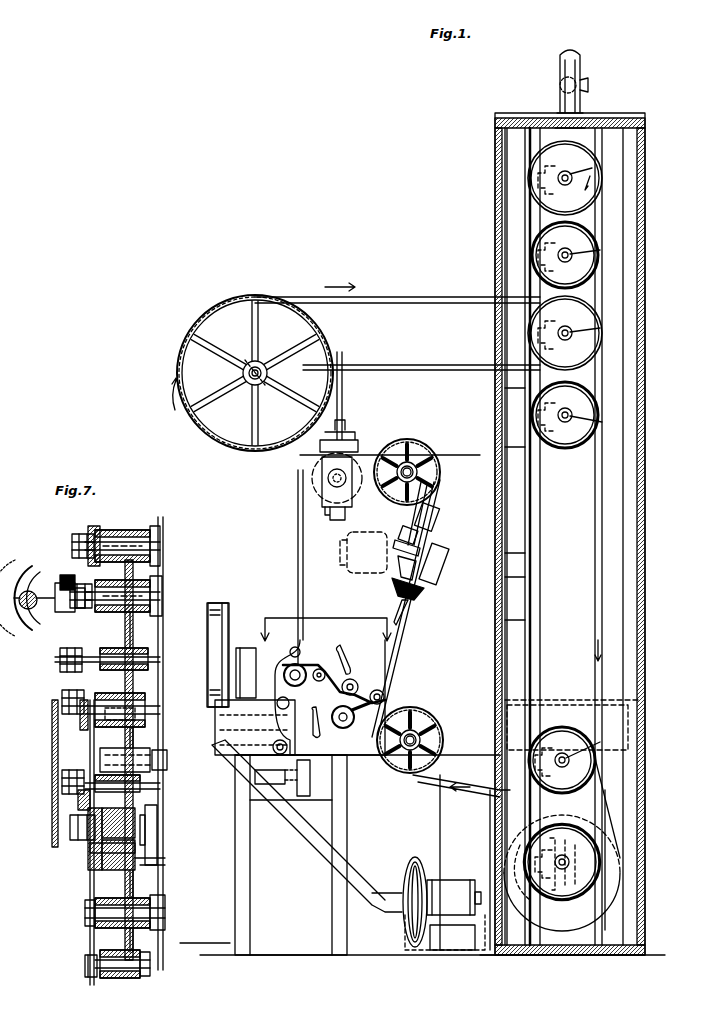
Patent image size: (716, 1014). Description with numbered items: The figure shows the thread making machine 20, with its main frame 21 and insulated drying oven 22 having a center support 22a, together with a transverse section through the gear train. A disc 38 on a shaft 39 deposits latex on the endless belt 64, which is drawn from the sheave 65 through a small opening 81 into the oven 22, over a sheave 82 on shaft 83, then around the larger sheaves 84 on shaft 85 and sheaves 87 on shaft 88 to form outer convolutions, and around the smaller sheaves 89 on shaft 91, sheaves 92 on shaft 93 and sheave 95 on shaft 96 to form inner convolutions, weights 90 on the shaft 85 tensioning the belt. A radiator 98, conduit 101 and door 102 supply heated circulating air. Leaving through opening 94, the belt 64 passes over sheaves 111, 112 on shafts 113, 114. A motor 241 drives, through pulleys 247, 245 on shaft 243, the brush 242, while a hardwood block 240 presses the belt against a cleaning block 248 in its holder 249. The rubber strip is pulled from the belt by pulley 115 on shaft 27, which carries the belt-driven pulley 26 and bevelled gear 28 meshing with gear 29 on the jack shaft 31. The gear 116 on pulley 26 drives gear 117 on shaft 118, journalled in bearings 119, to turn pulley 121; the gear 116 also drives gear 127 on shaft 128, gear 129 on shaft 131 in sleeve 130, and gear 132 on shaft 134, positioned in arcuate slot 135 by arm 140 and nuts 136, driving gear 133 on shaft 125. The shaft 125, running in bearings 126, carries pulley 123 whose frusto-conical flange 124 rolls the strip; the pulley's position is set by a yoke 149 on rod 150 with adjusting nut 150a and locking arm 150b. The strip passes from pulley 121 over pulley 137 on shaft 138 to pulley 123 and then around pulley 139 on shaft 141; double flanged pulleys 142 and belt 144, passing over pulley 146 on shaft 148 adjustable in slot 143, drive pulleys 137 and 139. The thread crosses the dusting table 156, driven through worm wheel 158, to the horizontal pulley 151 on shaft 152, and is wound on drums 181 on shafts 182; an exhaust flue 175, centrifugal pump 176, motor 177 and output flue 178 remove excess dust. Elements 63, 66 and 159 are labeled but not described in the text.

In FIG. 1, the thread making machine 20 is at (298, 535).
In FIG. 1, the main frame 21 is at (303, 563).
In FIG. 7, the main frame 21 is at (163, 575).
In FIG. 1, the drying oven 22 is at (642, 620).
In FIG. 1, the center support 22a is at (541, 518).
In FIG. 7, the second pulley 26 is at (78, 585).
In FIG. 7, the shaft 27 is at (134, 620).
In FIG. 7, the bevelled gear 28 is at (62, 575).
In FIG. 7, the beveled gear 29 is at (32, 585).
In FIG. 7, the jack shaft 31 is at (22, 578).
In FIG. 1, the disc 38 is at (320, 483).
In FIG. 1, the shaft 39 is at (330, 488).
In FIG. 1, the bracket 63 is at (320, 452).
In FIG. 1, the endless belt 64 is at (480, 303).
In FIG. 1, the sheave 65 is at (205, 330).
In FIG. 1, the pulley shaft 66 is at (255, 383).
In FIG. 1, the small opening 81 is at (487, 297).
In FIG. 1, the sheave 82 is at (592, 311).
In FIG. 1, the journalled shaft 83 is at (595, 328).
In FIG. 1, the sheaves 84 is at (580, 895).
In FIG. 1, the shaft 85 is at (615, 855).
In FIG. 1, the sheaves 87 is at (590, 156).
In FIG. 1, the shaft 88 is at (594, 167).
In FIG. 1, the sheaves 89 is at (570, 715).
In FIG. 1, the weights 90 is at (500, 850).
In FIG. 1, the shaft 91 is at (593, 743).
In FIG. 1, the sheaves 92 is at (590, 233).
In FIG. 1, the shaft 93 is at (595, 249).
In FIG. 1, the small opening 94 is at (493, 785).
In FIG. 1, the sheave 95 is at (592, 404).
In FIG. 1, the shaft 96 is at (596, 422).
In FIG. 1, the radiator 98 is at (620, 748).
In FIG. 1, the conduit 101 is at (610, 800).
In FIG. 1, the door 102 is at (600, 915).
In FIG. 1, the sheave 111 is at (430, 725).
In FIG. 1, the sheave 112 is at (420, 462).
In FIG. 1, the shaft 113 is at (444, 740).
In FIG. 1, the shaft 114 is at (412, 440).
In FIG. 1, the pulley 115 is at (382, 690).
In FIG. 7, the pulley 115 is at (162, 530).
In FIG. 7, the gear 116 is at (125, 618).
In FIG. 7, the gear 117 is at (80, 534).
In FIG. 7, the shaft 118 is at (130, 522).
In FIG. 7, the bearings 119 is at (94, 526).
In FIG. 1, the pulley 121 is at (358, 636).
In FIG. 7, the pulley 121 is at (165, 595).
In FIG. 1, the pulley 123 is at (282, 652).
In FIG. 7, the pulley 123 is at (150, 845).
In FIG. 7, the frusto-conical flange 124 is at (160, 858).
In FIG. 7, the shaft 125 is at (158, 828).
In FIG. 7, the bearings 126 is at (90, 850).
In FIG. 7, the gear 127 is at (62, 695).
In FIG. 7, the shaft 128 is at (150, 655).
In FIG. 7, the gear 129 is at (80, 710).
In FIG. 7, the sleeve 130 is at (145, 690).
In FIG. 7, the shaft 131 is at (148, 705).
In FIG. 7, the gear 132 is at (150, 714).
In FIG. 7, the gear 133 is at (72, 840).
In FIG. 7, the shaft 134 is at (145, 788).
In FIG. 1, the arcuate slot 135 is at (343, 729).
In FIG. 7, the arcuate slot 135 is at (142, 792).
In FIG. 7, the nuts 136 is at (62, 785).
In FIG. 1, the pulley 137 is at (302, 660).
In FIG. 7, the pulley 137 is at (165, 752).
In FIG. 7, the shaft 138 is at (167, 762).
In FIG. 1, the pulley 139 is at (315, 682).
In FIG. 7, the pulley 139 is at (165, 915).
In FIG. 7, the arm 140 is at (58, 745).
In FIG. 7, the shaft 141 is at (135, 918).
In FIG. 7, the double flanged pulleys 142 is at (88, 915).
In FIG. 7, the slot 143 is at (145, 976).
In FIG. 7, the belt 144 is at (90, 942).
In FIG. 7, the pulley 146 is at (88, 965).
In FIG. 7, the shaft 148 is at (110, 978).
In FIG. 7, the yoke 149 is at (160, 863).
In FIG. 7, the rod 150 is at (158, 872).
In FIG. 7, the adjusting nut 150a is at (95, 860).
In FIG. 7, the locking arm 150b is at (105, 838).
In FIG. 1, the horizontally positioned pulley 151 is at (240, 700).
In FIG. 7, the shaft 152 is at (78, 800).
In FIG. 1, the circular table 156 is at (313, 720).
In FIG. 1, the worm wheel 158 is at (280, 755).
In FIG. 1, the roller 159 is at (283, 703).
In FIG. 1, the exhaust flue 175 is at (252, 830).
In FIG. 1, the centrifugal pump 176 is at (420, 860).
In FIG. 1, the motor 177 is at (460, 878).
In FIG. 1, the output flue 178 is at (408, 935).
In FIG. 1, the cylindrical drums 181 is at (228, 606).
In FIG. 7, the cylindrical drums 181 is at (218, 838).
In FIG. 1, the shafts 182 is at (300, 790).
In FIG. 1, the hardwood block 240 is at (418, 612).
In FIG. 1, the electric motor 241 is at (347, 568).
In FIG. 1, the circular brush 242 is at (392, 583).
In FIG. 1, the shaft 243 is at (398, 608).
In FIG. 1, the pulley 245 is at (410, 525).
In FIG. 1, the pulley 247 is at (406, 540).
In FIG. 1, the cleaning block 248 is at (440, 500).
In FIG. 1, the holder 249 is at (438, 512).